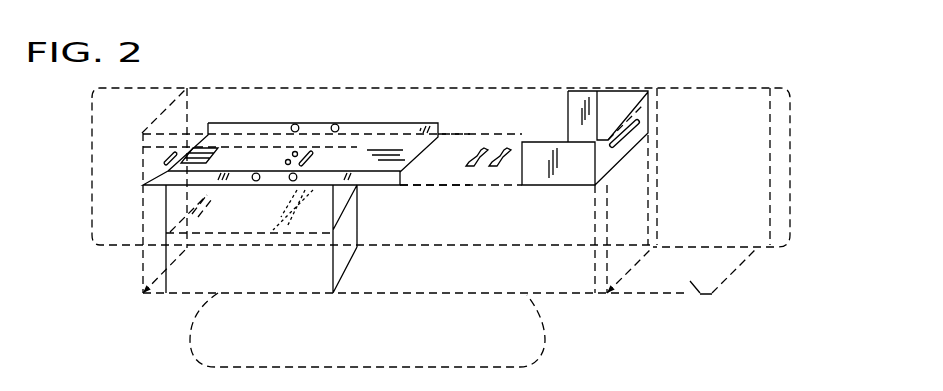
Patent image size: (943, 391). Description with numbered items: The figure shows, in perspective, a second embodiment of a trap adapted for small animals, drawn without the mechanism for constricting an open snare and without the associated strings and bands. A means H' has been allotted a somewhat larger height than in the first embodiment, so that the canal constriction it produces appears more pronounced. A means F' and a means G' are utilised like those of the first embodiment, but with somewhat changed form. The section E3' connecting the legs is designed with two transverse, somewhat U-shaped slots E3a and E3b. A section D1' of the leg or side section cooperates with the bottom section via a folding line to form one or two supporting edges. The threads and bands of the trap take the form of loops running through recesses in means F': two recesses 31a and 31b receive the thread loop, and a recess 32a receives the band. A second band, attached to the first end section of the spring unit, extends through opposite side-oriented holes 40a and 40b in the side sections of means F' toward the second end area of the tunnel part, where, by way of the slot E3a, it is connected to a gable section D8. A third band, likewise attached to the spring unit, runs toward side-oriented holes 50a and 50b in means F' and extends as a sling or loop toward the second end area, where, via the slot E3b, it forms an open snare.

The means F' is at (290, 105).
The recess for thread loop 31a is at (293, 150).
The recess for thread loop 31b is at (283, 162).
The recess for band 32a is at (312, 157).
The side-oriented hole 40a is at (296, 124).
The side-oriented hole 40b is at (256, 181).
The side-oriented hole 50a is at (336, 124).
The side-oriented hole 50b is at (294, 181).
The leg-connecting section E3' is at (443, 114).
The U-shaped slot E3a is at (483, 150).
The U-shaped slot E3b is at (505, 150).
The means G' is at (585, 99).
The means H' is at (165, 260).
The section of leg or side section D1' is at (415, 313).
The gable section D8 is at (702, 302).